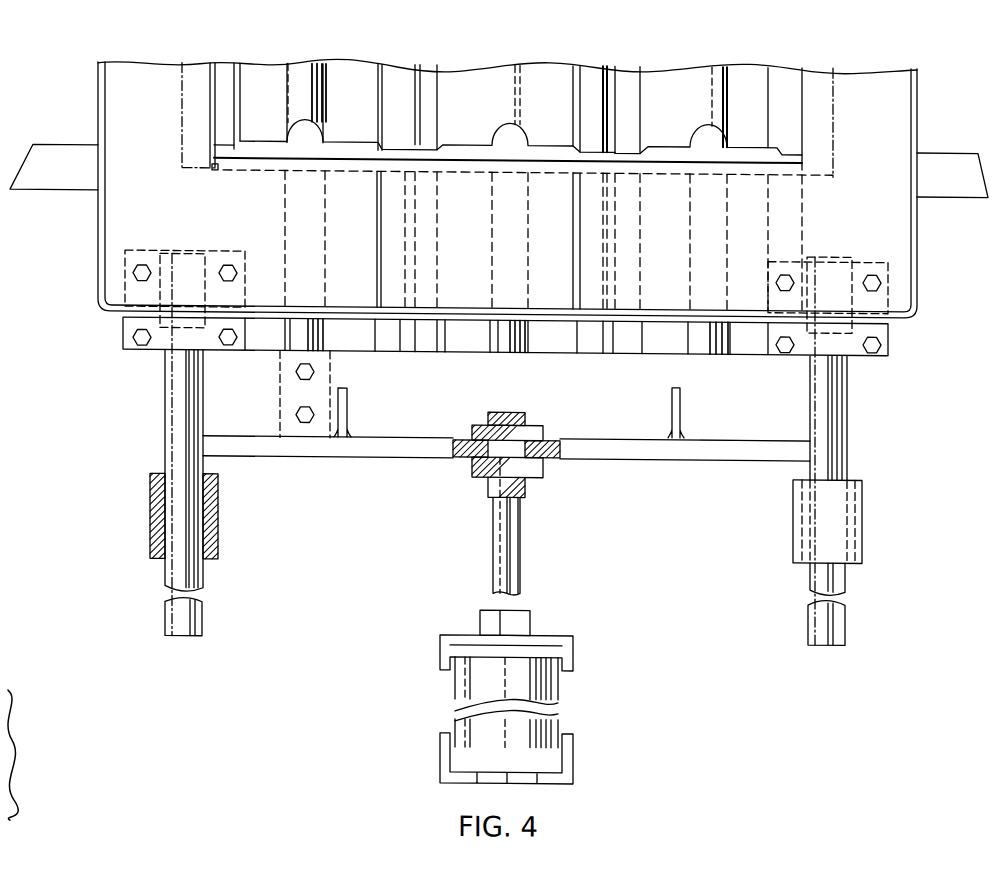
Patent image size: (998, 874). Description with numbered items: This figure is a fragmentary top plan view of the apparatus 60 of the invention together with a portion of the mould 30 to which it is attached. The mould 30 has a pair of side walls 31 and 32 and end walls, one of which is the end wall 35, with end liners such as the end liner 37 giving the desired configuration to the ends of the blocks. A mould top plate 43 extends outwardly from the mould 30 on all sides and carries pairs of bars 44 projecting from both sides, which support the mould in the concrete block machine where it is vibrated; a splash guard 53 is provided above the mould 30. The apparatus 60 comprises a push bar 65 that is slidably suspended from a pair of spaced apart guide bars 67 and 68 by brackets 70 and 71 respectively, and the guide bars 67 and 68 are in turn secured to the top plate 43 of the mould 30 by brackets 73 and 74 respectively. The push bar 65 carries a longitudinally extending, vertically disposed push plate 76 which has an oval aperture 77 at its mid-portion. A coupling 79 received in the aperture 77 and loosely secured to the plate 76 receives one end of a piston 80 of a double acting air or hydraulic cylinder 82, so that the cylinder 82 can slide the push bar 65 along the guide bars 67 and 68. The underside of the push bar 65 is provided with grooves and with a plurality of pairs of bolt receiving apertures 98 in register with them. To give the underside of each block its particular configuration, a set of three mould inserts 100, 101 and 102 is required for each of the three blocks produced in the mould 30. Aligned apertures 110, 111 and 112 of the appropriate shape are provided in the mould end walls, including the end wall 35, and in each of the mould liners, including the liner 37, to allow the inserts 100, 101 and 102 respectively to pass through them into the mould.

The mould 30 is at (198, 116).
The side wall 31 is at (190, 86).
The side wall 32 is at (826, 112).
The end wall 35 is at (276, 158).
The end liner 37 is at (262, 139).
The mould top plate 43 is at (116, 219).
The bars 44 is at (52, 179).
The splash guard 53 is at (104, 292).
The apparatus 60 is at (858, 352).
The push bar 65 is at (748, 434).
The guide bar 67 is at (171, 393).
The guide bar 68 is at (835, 416).
The bracket 70 is at (150, 499).
The bracket 71 is at (858, 504).
The bracket 73 is at (235, 287).
The bracket 74 is at (872, 250).
The push plate 76 is at (607, 437).
The oval aperture 77 is at (492, 427).
The coupling 79 is at (540, 473).
The piston 80 is at (492, 476).
The double acting air or hydraulic cylinder 82 is at (463, 688).
The bolt receiving apertures 98 is at (296, 410).
The mould insert 100 is at (222, 78).
The mould insert 101 is at (320, 78).
The mould insert 102 is at (385, 127).
The aperture 110 is at (212, 166).
The aperture 111 is at (324, 110).
The aperture 112 is at (380, 163).